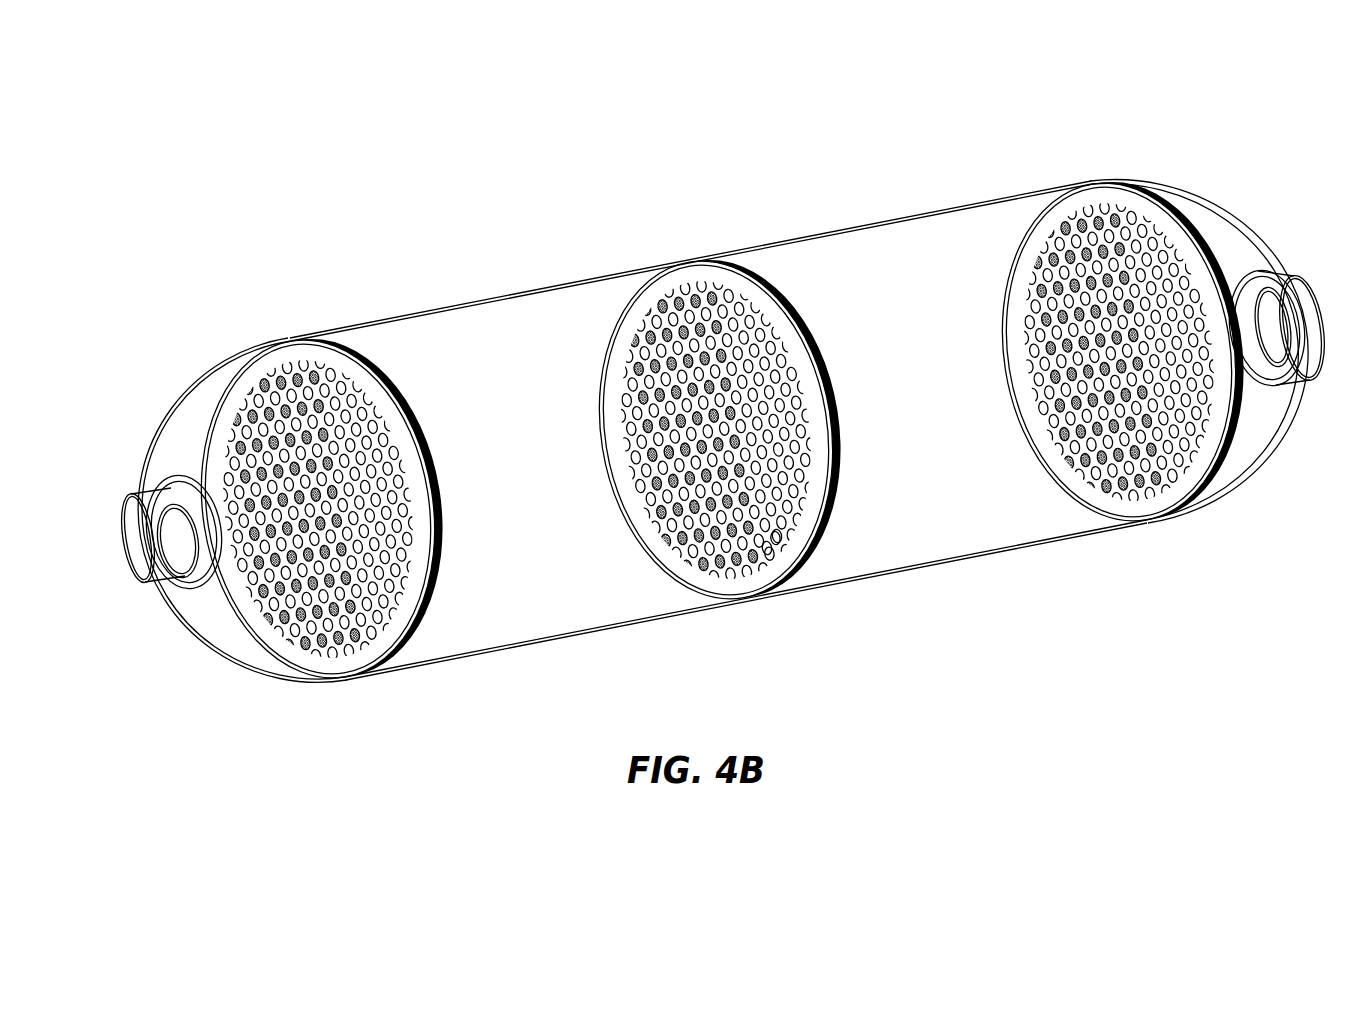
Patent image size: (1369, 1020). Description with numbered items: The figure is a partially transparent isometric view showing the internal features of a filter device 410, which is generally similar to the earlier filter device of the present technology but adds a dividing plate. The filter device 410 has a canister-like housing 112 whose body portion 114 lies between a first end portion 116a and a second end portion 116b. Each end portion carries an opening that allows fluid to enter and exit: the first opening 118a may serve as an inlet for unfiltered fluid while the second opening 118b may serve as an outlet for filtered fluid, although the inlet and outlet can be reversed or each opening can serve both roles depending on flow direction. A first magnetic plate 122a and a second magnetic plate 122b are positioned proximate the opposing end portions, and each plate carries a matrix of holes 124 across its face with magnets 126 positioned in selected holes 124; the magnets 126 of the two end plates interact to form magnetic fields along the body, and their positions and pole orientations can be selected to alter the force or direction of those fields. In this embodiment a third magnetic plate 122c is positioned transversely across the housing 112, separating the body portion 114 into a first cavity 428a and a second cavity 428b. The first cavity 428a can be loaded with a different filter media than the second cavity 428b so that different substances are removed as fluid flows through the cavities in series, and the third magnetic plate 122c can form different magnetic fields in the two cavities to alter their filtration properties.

The filter device 410 is at (435, 208).
The housing 112 is at (540, 615).
The body portion 114 is at (935, 562).
The first end portion 116a is at (242, 650).
The second end portion 116b is at (1272, 442).
The first opening 118a is at (133, 530).
The second opening 118b is at (1310, 323).
The first magnetic plate 122a is at (275, 358).
The second magnetic plate 122b is at (1067, 212).
The third magnetic plate 122c is at (721, 435).
The holes 124 is at (728, 550).
The magnets 126 is at (777, 540).
The first cavity 428a is at (489, 337).
The second cavity 428b is at (871, 262).